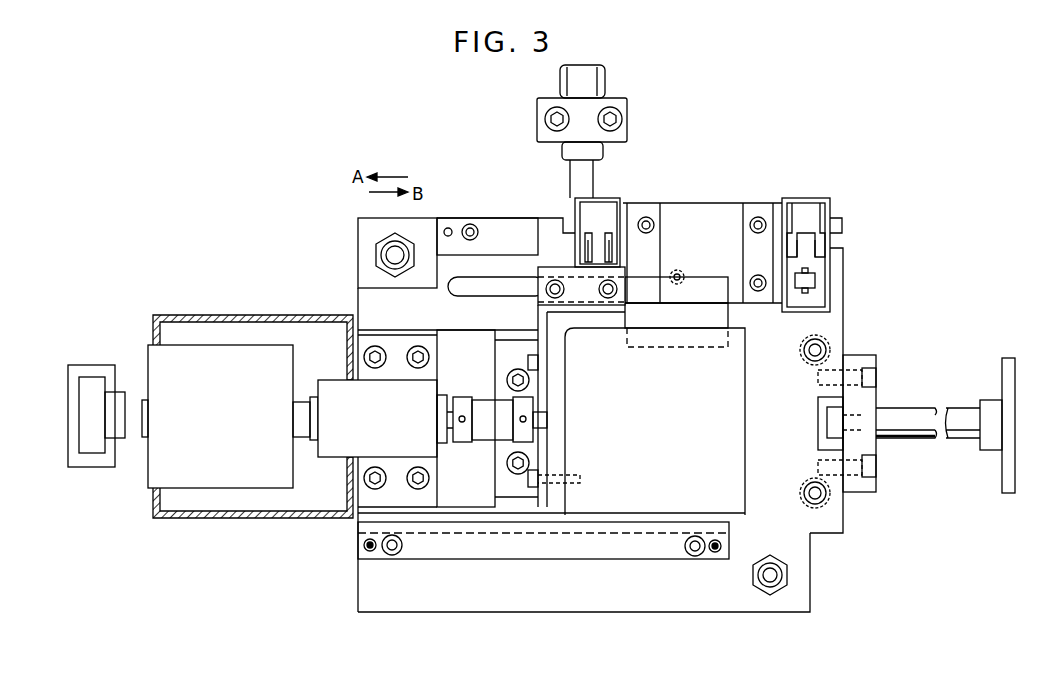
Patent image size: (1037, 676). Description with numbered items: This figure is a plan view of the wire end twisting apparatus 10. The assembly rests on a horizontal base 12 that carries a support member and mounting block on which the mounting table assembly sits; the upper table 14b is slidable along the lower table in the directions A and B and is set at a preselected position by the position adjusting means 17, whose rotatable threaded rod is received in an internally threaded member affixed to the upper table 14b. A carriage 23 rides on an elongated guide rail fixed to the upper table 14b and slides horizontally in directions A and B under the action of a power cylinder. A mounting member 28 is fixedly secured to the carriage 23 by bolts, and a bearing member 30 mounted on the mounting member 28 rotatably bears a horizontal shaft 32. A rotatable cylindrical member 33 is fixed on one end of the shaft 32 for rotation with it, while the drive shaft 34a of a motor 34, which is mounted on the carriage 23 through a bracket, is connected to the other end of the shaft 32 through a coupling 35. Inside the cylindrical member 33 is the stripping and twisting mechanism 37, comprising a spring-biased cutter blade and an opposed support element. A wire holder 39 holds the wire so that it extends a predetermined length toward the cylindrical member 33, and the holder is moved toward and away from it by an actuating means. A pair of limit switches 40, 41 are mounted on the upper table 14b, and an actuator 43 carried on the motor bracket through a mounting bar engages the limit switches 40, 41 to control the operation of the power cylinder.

The wire end twisting apparatus 10 is at (712, 160).
The horizontal base 12 is at (690, 602).
The upper table 14b is at (488, 263).
The position adjusting means 17 is at (915, 400).
The carriage 23 is at (517, 497).
The mounting member 28 is at (428, 373).
The bearing member 30 is at (428, 448).
The shaft 32 is at (450, 427).
The rotatable cylindrical member 33 is at (240, 352).
The motor 34 is at (735, 408).
The drive shaft 34a is at (542, 419).
The coupling 35 is at (487, 407).
The stripping and twisting mechanism 37 is at (145, 440).
The wire holder 39 is at (92, 370).
The limit switch 40 is at (600, 208).
The limit switch 41 is at (803, 213).
The actuator 43 is at (568, 275).